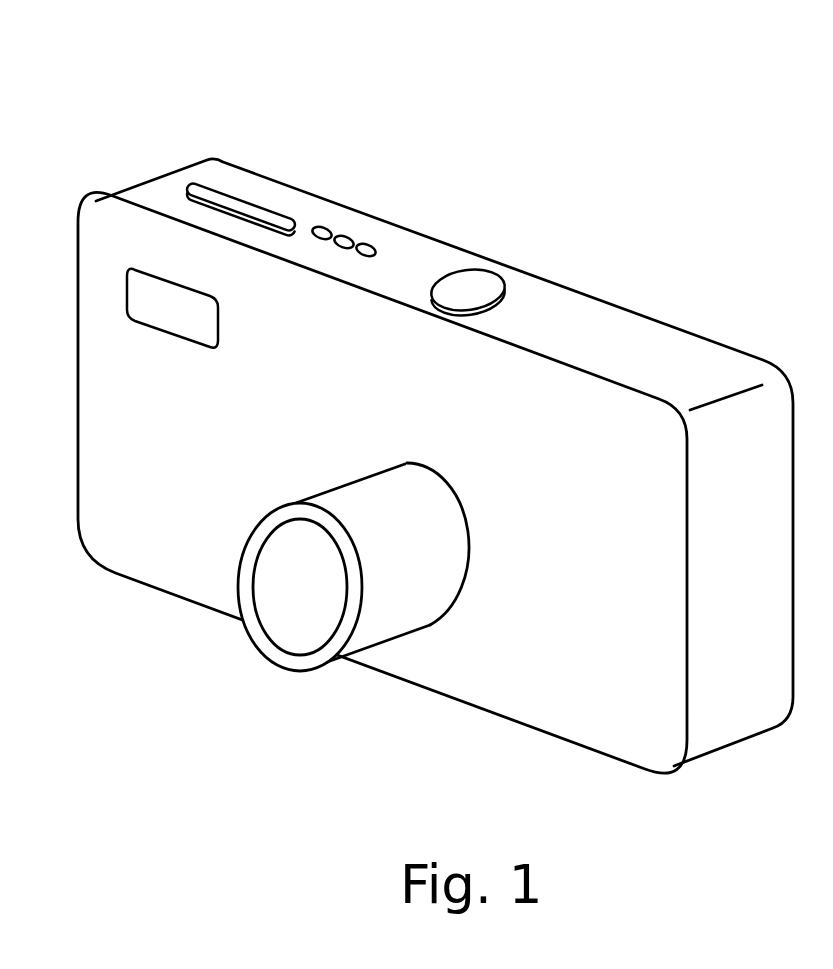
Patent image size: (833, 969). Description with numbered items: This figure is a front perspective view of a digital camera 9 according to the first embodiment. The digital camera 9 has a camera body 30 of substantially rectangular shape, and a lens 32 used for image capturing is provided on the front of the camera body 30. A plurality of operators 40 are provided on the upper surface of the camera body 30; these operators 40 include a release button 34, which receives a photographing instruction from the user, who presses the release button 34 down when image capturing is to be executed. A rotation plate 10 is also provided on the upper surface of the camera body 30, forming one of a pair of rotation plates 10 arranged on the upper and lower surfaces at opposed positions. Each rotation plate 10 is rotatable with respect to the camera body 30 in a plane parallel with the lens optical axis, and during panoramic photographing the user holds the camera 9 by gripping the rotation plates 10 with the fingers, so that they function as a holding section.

The digital camera 9 is at (439, 391).
The rotation plate 10 is at (468, 282).
The camera body 30 is at (678, 352).
The lens 32 is at (290, 636).
The release button 34 is at (212, 195).
The operators 40 is at (373, 243).